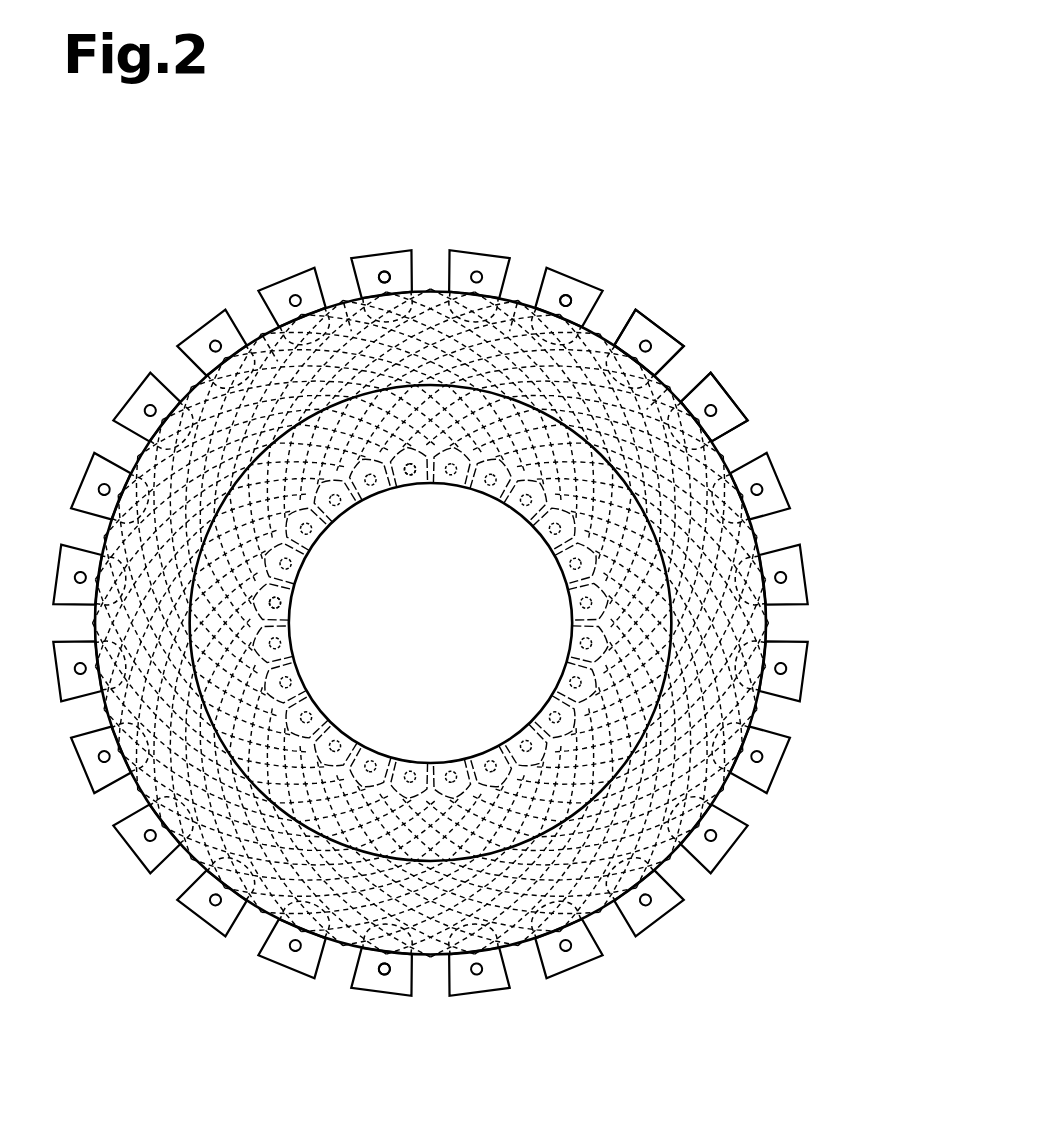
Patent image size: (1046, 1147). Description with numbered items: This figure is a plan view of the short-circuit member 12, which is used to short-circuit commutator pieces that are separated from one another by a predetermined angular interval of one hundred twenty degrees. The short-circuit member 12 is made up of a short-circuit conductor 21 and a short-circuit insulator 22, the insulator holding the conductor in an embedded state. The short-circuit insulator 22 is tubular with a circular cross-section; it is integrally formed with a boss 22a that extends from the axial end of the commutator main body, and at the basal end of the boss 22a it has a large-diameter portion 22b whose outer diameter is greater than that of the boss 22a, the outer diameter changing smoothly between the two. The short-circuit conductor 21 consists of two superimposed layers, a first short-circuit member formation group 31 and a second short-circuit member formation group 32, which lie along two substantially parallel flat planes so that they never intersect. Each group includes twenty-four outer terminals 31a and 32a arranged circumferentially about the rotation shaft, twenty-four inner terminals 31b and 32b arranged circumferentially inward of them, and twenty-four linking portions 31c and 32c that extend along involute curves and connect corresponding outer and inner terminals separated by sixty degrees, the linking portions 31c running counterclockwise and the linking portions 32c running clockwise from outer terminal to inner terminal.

The short-circuit member 12 is at (737, 228).
The short-circuit conductor 21 is at (655, 317).
The short-circuit insulator 22 is at (491, 623).
The boss 22a is at (665, 540).
The large-diameter portion 22b is at (767, 623).
The first short-circuit member formation group 31 is at (775, 403).
The second short-circuit member formation group 32 is at (733, 390).
The outer terminals 31a is at (495, 630).
The outer terminals 32a is at (378, 250).
The inner terminals 31b is at (369, 542).
The inner terminals 32b is at (393, 485).
The linking portions 31c is at (471, 292).
The linking portions 32c is at (343, 300).